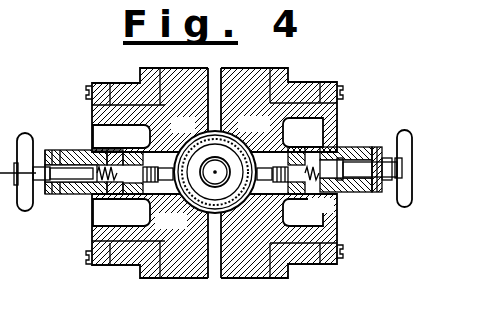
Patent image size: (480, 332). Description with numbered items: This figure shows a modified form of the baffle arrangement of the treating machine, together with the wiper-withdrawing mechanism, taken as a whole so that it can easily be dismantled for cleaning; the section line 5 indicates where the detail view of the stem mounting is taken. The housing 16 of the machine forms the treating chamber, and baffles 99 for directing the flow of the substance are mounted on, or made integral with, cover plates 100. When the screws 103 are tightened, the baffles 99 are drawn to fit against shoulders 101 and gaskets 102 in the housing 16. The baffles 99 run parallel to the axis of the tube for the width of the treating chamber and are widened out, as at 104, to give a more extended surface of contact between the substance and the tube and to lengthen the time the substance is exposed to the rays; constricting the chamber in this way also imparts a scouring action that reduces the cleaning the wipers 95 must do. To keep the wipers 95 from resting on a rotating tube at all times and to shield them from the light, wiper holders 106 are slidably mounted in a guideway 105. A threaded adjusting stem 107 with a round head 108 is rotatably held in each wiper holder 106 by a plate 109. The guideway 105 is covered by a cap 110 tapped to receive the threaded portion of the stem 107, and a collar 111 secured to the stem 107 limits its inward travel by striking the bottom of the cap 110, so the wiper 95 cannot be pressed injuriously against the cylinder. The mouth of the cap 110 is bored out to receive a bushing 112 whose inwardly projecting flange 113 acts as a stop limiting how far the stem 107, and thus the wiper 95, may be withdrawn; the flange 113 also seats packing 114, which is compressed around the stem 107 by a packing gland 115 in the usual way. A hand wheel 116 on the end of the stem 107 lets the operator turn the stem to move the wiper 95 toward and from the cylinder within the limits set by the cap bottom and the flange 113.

The section line 5- 5 is at (116, 128).
The housing 16 is at (166, 70).
The wipers 95 is at (163, 151).
The baffles 99 is at (150, 125).
The cover plates 100 is at (92, 83).
The shoulders 101 is at (264, 68).
The gaskets 102 is at (271, 103).
The screws 103 is at (90, 265).
The widened portion of baffles 104 is at (184, 215).
The guideway 105 is at (337, 147).
The wiper holders 106 is at (145, 140).
The threaded adjusting stem 107 is at (60, 196).
The round head 108 is at (355, 147).
The plate 109 is at (337, 195).
The cap 110 is at (365, 147).
The collar 111 is at (387, 147).
The bushing 112 is at (62, 152).
The inwardly projecting flange 113 is at (72, 152).
The packing 114 is at (50, 150).
The packing gland 115 is at (383, 182).
The hand wheel 116 is at (411, 166).